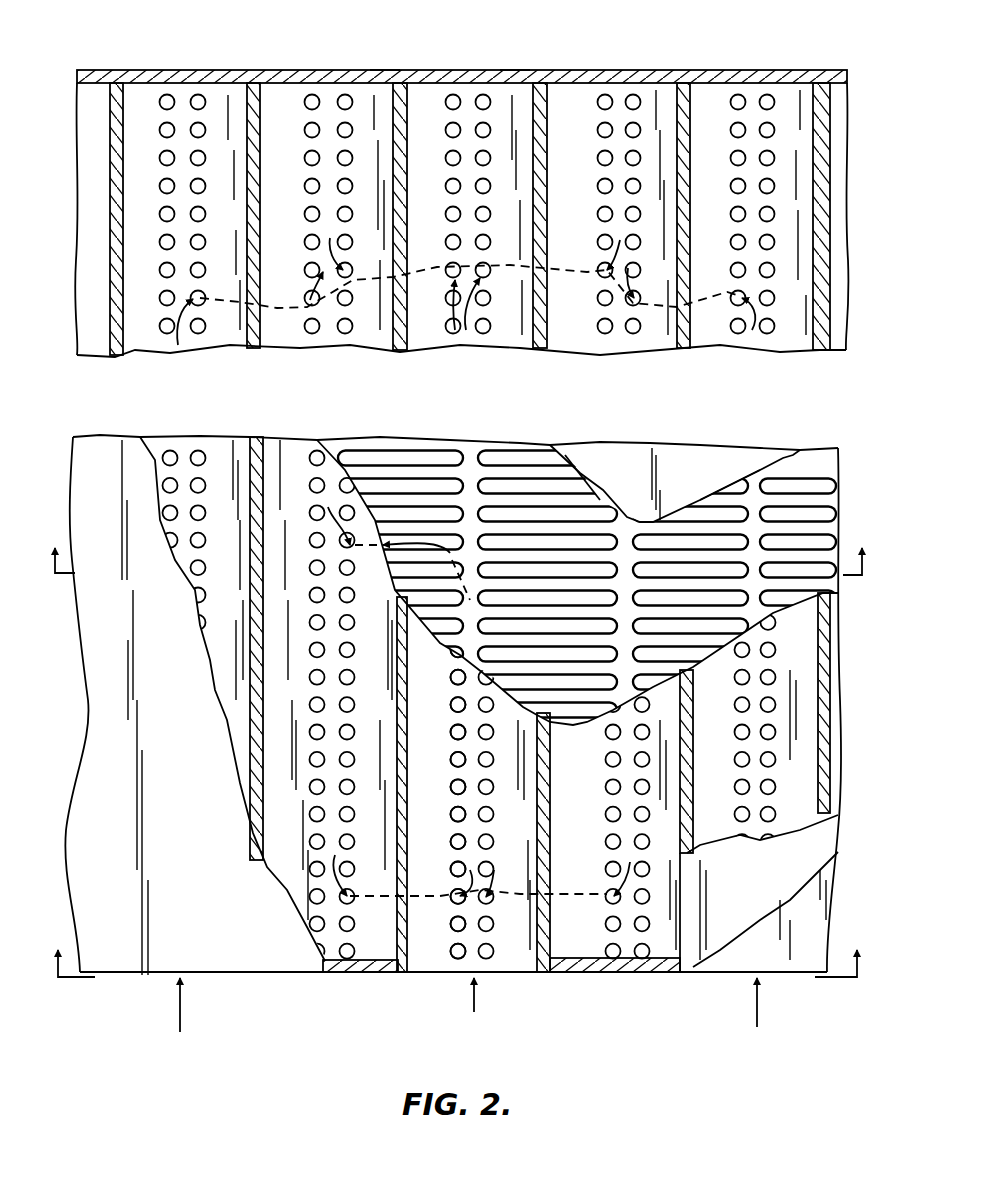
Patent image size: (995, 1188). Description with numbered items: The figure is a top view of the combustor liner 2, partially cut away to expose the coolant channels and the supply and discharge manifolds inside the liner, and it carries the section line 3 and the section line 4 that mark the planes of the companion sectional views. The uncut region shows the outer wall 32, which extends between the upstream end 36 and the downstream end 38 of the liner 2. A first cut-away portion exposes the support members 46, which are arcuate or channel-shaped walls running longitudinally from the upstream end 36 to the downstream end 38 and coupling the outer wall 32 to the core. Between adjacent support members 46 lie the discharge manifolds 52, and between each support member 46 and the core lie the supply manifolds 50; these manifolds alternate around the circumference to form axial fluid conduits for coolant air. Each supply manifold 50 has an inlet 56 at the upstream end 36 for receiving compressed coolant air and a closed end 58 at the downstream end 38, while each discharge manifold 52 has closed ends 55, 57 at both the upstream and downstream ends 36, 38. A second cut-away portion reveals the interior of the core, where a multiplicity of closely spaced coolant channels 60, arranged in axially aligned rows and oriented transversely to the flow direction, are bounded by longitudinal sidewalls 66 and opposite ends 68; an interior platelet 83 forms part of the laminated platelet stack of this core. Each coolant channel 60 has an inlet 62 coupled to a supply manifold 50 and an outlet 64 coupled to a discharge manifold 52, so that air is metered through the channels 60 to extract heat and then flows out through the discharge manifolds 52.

The combustor liner 2 is at (152, 983).
The section line 3- 3 is at (457, 545).
The section line 4- 4 is at (455, 947).
The outer wall 32 is at (107, 703).
The upstream end 36 is at (227, 975).
The downstream end 38 is at (805, 70).
The support members 46 is at (264, 722).
The supply manifolds 50 is at (525, 322).
The discharge manifolds 52 is at (300, 174).
The closed end 55 is at (333, 975).
The inlets 56 is at (517, 975).
The closed end 57 is at (381, 70).
The closed ends 58 is at (514, 70).
The coolant channels 60 is at (413, 449).
The inlet 62 is at (458, 806).
The outlet 64 is at (605, 766).
The longitudinal sidewalls 66 is at (568, 468).
The opposite ends 68 is at (752, 520).
The interior platelet 83 is at (683, 460).